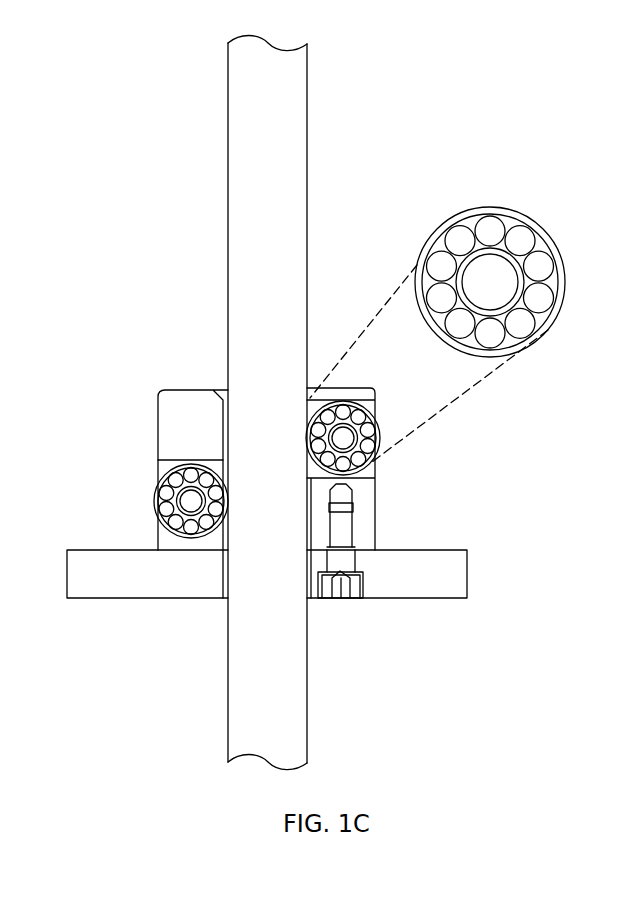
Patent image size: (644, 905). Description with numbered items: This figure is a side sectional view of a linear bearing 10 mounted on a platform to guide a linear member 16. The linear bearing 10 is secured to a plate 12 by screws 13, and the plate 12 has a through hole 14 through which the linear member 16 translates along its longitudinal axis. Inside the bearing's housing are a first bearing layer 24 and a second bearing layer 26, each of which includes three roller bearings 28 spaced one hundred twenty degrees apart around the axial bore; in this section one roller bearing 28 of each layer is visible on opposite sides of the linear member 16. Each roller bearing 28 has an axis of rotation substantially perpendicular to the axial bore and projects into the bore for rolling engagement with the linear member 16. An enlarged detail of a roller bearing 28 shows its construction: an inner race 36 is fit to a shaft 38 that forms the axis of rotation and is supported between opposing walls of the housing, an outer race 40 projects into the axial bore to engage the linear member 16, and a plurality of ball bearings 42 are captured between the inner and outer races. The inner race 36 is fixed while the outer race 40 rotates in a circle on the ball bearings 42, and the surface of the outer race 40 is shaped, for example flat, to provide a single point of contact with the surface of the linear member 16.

The linear bearing 10 is at (158, 380).
The plate 12 is at (127, 577).
The screws 13 is at (348, 583).
The through hole 14 is at (222, 608).
The linear member 16 is at (308, 232).
The first bearing layer 24 is at (391, 429).
The second bearing layer 26 is at (142, 495).
The roller bearing 28 is at (464, 331).
The inner race 36 is at (457, 290).
The shaft 38 is at (500, 293).
The outer race 40 is at (563, 280).
The ball bearings 42 is at (537, 267).